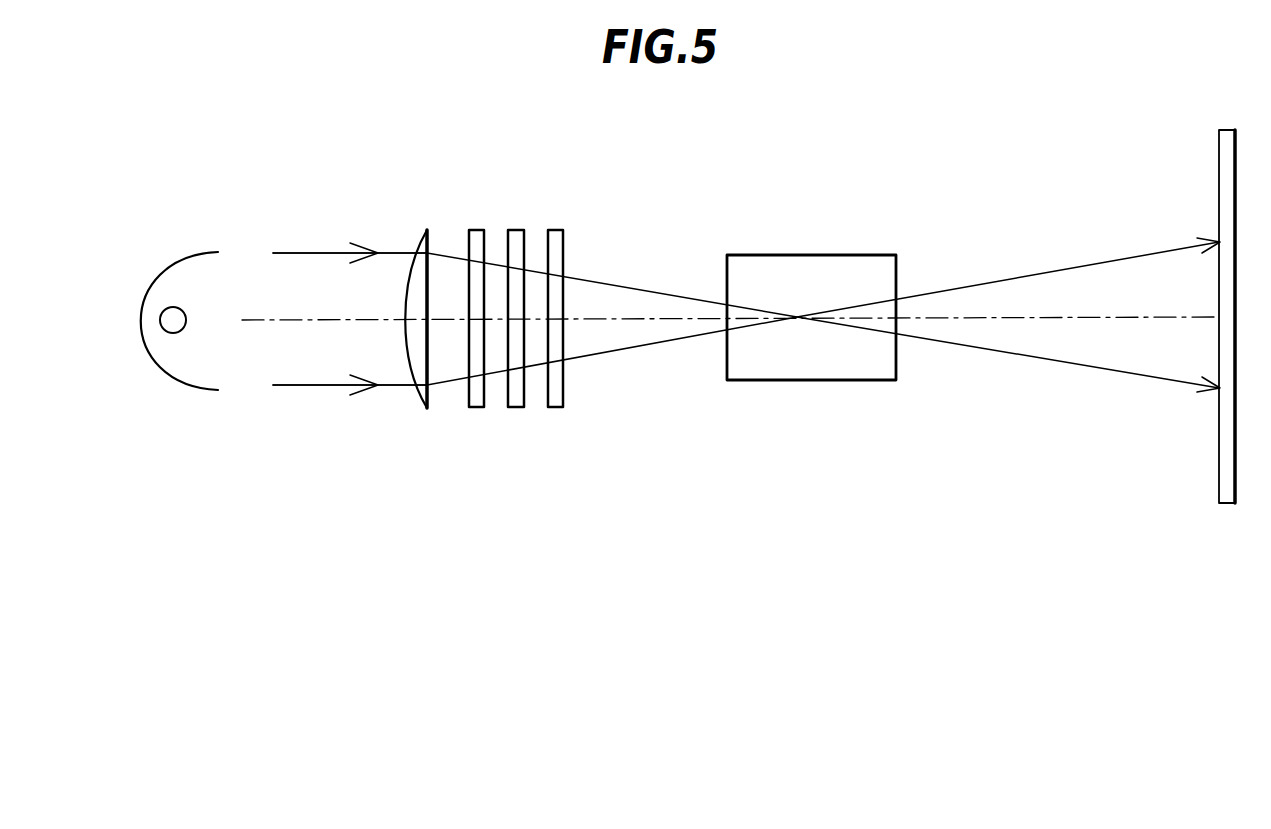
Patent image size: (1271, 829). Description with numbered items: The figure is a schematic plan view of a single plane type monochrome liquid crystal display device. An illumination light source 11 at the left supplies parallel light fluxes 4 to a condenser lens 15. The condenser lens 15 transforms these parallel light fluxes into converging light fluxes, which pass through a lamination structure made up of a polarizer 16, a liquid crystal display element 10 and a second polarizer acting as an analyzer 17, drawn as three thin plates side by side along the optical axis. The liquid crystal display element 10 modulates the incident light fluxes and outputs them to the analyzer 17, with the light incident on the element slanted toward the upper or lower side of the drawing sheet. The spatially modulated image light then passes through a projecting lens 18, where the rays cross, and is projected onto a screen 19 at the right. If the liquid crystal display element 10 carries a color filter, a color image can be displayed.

The illumination light source 11 is at (173, 251).
The parallel light fluxes 4 is at (313, 253).
The condenser lens 15 is at (423, 236).
The polarizer 16 is at (477, 230).
The liquid crystal display element 10 is at (517, 230).
The polarizer (analyzer) 17 is at (553, 230).
The projecting lens 18 is at (813, 255).
The screen 19 is at (1219, 160).